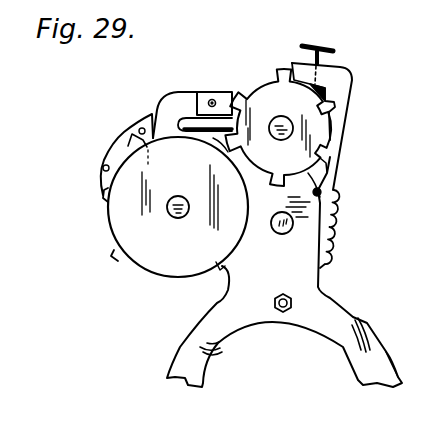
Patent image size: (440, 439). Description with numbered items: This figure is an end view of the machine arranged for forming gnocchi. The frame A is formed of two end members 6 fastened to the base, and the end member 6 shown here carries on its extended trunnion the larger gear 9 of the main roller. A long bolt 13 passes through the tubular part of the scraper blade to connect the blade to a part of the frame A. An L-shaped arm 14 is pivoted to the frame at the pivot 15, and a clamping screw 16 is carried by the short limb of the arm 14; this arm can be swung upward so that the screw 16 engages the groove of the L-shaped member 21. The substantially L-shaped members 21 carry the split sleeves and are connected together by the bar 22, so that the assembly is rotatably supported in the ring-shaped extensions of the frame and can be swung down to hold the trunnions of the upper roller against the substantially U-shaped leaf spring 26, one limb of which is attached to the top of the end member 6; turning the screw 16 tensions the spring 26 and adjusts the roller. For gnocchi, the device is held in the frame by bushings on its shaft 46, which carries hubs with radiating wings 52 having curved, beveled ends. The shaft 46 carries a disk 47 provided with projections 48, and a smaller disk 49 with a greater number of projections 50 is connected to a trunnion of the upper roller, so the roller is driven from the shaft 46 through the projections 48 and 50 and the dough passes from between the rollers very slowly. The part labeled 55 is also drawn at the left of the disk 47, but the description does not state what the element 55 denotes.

The frame A is at (168, 363).
The end member 6 is at (377, 347).
The larger gear 9 is at (340, 222).
The long bolt 13 is at (283, 313).
The L-shaped arm 14 is at (345, 106).
The pivot 15 is at (323, 191).
The clamping screw 16 is at (323, 47).
The L-shaped member 21 is at (165, 110).
The bar 22 is at (203, 93).
The leaf spring 26 is at (195, 128).
The shaft 46 is at (178, 195).
The disk 47 is at (173, 262).
The projection 48 is at (115, 257).
The disk 49 is at (318, 133).
The projection 50 is at (330, 158).
The radiating wing 52 is at (103, 193).
The guard plate 55 is at (118, 143).